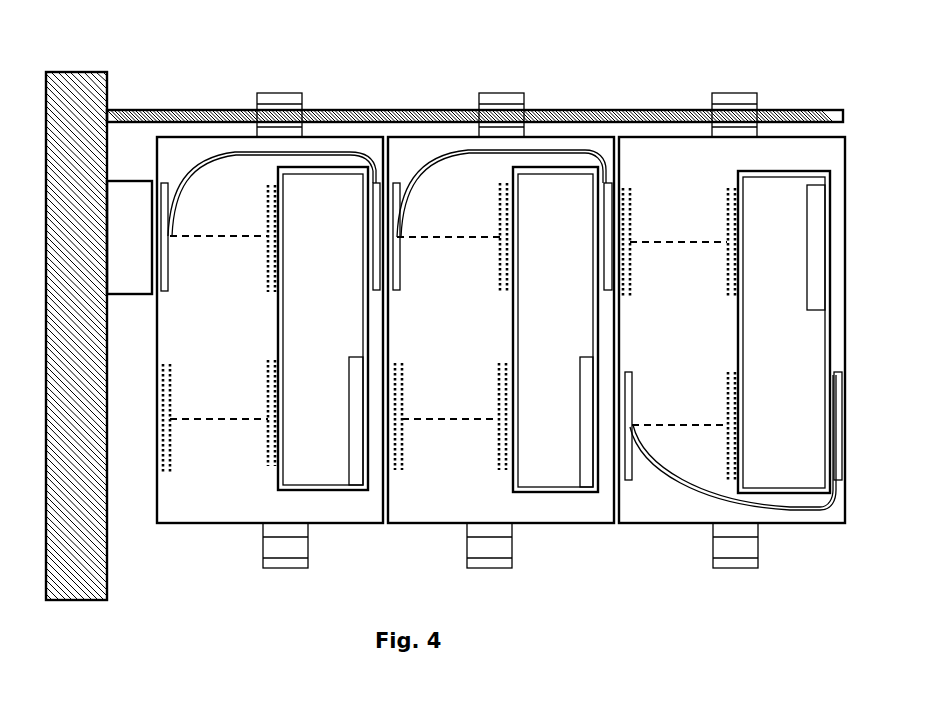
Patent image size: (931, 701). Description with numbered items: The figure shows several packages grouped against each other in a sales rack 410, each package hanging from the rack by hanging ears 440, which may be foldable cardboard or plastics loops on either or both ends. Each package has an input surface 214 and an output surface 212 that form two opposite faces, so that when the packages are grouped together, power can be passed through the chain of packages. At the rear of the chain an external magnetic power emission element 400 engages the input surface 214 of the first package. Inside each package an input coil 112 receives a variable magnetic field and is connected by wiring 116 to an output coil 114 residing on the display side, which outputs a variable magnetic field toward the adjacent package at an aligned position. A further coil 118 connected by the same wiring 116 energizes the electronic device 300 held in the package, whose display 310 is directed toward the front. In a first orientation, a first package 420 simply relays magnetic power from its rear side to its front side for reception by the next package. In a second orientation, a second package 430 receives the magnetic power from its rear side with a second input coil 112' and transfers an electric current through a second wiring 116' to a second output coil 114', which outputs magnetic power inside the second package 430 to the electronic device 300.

The sales rack 410 is at (86, 72).
The first package 420 is at (352, 110).
The second package 430 is at (812, 137).
The hanging ears 440 is at (285, 93).
The external magnetic power emission element 400 is at (138, 294).
The input surface 214 is at (157, 330).
The electronic device 300 is at (327, 453).
The display 310 is at (349, 412).
The input coil 112 is at (141, 177).
The second input coil 112' is at (415, 325).
The output surface 212 is at (383, 175).
The output coil 114 is at (506, 160).
The second output coil 114' is at (581, 294).
The wiring 116 is at (385, 241).
The second wiring 116' is at (518, 368).
The further coil 118 is at (270, 185).